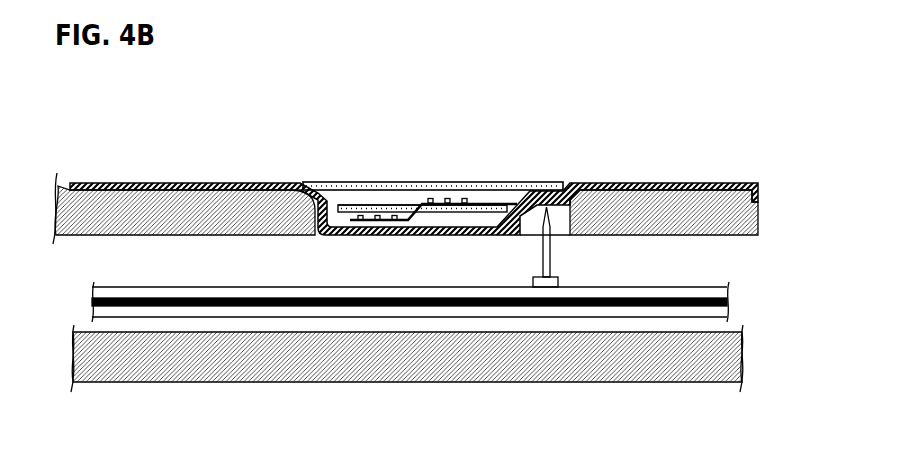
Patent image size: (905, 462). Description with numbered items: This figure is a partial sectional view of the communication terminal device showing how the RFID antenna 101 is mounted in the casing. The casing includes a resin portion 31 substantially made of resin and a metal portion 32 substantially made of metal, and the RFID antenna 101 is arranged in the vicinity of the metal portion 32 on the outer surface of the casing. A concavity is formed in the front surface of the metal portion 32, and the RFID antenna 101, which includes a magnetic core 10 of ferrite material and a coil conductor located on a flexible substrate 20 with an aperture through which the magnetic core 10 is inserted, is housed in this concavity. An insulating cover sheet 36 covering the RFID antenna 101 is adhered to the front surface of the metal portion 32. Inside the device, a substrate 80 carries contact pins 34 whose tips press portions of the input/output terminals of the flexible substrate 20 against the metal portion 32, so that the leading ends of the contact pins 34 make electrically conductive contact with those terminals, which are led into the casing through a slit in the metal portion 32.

The magnetic core 10 is at (338, 207).
The RFID antenna 101 is at (378, 204).
The flexible substrate 20 is at (420, 204).
The resin portion 31 is at (752, 215).
The metal portion 32 is at (618, 182).
The contact pins 34 is at (551, 253).
The insulating cover sheet 36 is at (487, 182).
The substrate 80 is at (647, 287).